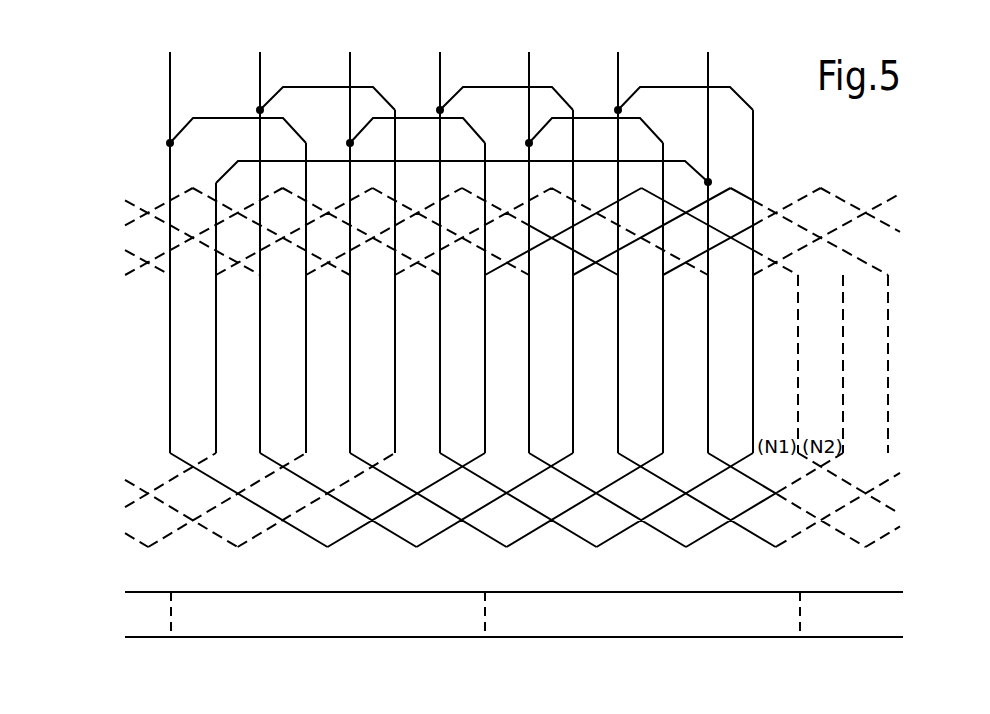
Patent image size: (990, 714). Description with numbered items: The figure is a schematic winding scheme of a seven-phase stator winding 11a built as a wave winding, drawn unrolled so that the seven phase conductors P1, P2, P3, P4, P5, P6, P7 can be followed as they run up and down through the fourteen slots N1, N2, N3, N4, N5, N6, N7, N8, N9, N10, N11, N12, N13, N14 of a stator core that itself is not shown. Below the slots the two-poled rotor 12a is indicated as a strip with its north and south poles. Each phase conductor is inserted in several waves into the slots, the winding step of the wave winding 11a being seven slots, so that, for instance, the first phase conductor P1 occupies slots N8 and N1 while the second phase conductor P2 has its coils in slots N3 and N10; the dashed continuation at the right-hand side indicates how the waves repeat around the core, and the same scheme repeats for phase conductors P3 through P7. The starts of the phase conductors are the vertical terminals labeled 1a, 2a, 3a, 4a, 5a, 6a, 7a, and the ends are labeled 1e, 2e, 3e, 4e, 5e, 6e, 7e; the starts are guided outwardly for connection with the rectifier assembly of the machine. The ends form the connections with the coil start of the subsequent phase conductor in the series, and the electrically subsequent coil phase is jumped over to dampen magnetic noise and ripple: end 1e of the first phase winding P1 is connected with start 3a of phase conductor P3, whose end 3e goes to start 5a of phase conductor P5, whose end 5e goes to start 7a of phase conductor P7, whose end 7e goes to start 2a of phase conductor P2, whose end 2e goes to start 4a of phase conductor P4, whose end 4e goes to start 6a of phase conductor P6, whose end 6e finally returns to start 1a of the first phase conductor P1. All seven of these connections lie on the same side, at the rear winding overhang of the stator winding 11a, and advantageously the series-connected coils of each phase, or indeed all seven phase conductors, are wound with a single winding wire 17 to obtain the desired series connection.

The winding wire 17 is at (170, 322).
The stator winding 11a is at (168, 399).
The rotor 12a is at (198, 600).
The start of phase conductor P1 1a is at (170, 240).
The start of phase conductor P2 2a is at (259, 240).
The start of phase conductor P3 3a is at (349, 240).
The start of phase conductor P4 4a is at (439, 240).
The start of phase conductor P5 5a is at (528, 240).
The start of phase conductor P6 6a is at (617, 240).
The start of phase conductor P7 7a is at (707, 240).
The end of phase conductor P1 1e is at (487, 187).
The end of phase conductor P2 2e is at (575, 187).
The end of phase conductor P3 3e is at (665, 187).
The end of phase conductor P4 4e is at (755, 187).
The end of phase conductor P5 5e is at (217, 185).
The end of phase conductor P6 6e is at (308, 187).
The end of phase conductor P7 7e is at (397, 187).
The first phase conductor P1 is at (170, 333).
The second phase conductor P2 is at (260, 333).
The third phase conductor P3 is at (350, 333).
The fourth phase conductor P4 is at (440, 333).
The fifth phase conductor P5 is at (529, 333).
The sixth phase conductor P6 is at (618, 333).
The seventh phase conductor P7 is at (708, 333).
The slot N1 is at (155, 446).
The slot N2 is at (202, 446).
The slot N3 is at (246, 446).
The slot N4 is at (292, 446).
The slot N5 is at (336, 446).
The slot N6 is at (381, 446).
The slot N7 is at (426, 446).
The slot N8 is at (471, 446).
The slot N9 is at (515, 446).
The slot N10 is at (556, 446).
The slot N11 is at (601, 446).
The slot N12 is at (645, 446).
The slot N13 is at (690, 446).
The slot N14 is at (735, 446).